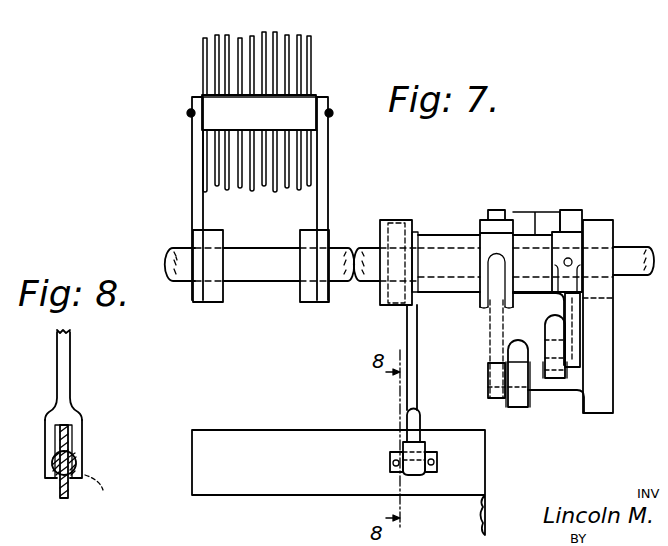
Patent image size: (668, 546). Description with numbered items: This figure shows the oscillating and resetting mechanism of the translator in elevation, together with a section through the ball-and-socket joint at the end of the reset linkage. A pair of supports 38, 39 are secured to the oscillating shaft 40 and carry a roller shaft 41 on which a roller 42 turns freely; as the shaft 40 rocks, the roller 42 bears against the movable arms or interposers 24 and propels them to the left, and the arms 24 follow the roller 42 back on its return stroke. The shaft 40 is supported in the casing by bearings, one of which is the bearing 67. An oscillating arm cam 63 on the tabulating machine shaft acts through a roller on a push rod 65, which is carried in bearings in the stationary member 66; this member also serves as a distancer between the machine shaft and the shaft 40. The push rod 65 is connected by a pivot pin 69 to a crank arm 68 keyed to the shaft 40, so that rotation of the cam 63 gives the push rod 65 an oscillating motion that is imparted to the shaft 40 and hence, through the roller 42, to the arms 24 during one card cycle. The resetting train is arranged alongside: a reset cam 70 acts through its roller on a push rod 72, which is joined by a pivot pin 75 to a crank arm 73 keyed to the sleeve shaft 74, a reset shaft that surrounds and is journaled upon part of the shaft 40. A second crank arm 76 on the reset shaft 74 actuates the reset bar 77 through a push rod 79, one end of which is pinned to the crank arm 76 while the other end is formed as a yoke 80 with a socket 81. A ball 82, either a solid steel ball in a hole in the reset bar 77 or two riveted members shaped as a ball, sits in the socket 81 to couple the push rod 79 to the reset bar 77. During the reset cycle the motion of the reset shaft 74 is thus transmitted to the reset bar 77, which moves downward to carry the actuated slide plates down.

In FIG. 7, the arms 24 is at (310, 30).
In FIG. 7, the support 38 is at (193, 187).
In FIG. 7, the support 39 is at (329, 172).
In FIG. 7, the oscillating shaft 40 is at (262, 271).
In FIG. 7, the roller shaft 41 is at (187, 113).
In FIG. 7, the roller 42 is at (297, 112).
In FIG. 7, the oscillating arm cam 63 is at (568, 212).
In FIG. 7, the push rod 65 is at (555, 376).
In FIG. 7, the stationary member 66 is at (602, 363).
In FIG. 7, the bearing 67 is at (603, 232).
In FIG. 7, the crank arm 68 is at (572, 313).
In FIG. 7, the pivot pin 69 is at (572, 350).
In FIG. 7, the reset cam 70 is at (500, 210).
In FIG. 7, the push rod 72 is at (518, 356).
In FIG. 7, the crank arm 73 is at (485, 223).
In FIG. 7, the sleeve shaft 74 is at (528, 260).
In FIG. 7, the pivot pin 75 is at (492, 385).
In FIG. 7, the crank arm 76 is at (397, 220).
In FIG. 7, the reset bar 77 is at (277, 443).
In FIG. 8, the reset bar 77 is at (57, 490).
In FIG. 7, the push rod 79 is at (410, 333).
In FIG. 8, the push rod 79 is at (70, 368).
In FIG. 8, the yoke 80 is at (82, 428).
In FIG. 8, the socket 81 is at (78, 462).
In FIG. 8, the ball 82 is at (104, 494).